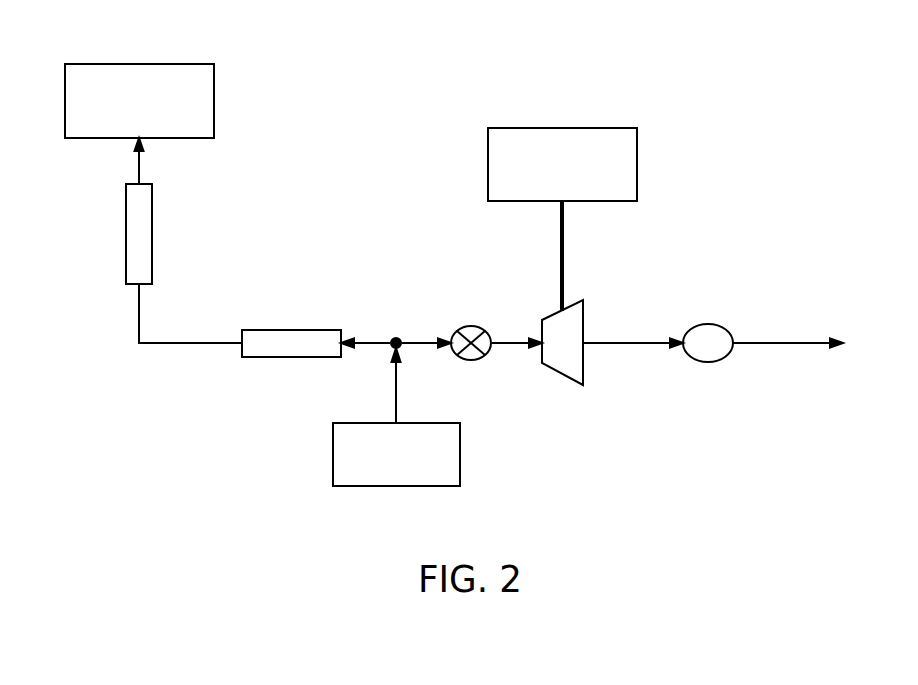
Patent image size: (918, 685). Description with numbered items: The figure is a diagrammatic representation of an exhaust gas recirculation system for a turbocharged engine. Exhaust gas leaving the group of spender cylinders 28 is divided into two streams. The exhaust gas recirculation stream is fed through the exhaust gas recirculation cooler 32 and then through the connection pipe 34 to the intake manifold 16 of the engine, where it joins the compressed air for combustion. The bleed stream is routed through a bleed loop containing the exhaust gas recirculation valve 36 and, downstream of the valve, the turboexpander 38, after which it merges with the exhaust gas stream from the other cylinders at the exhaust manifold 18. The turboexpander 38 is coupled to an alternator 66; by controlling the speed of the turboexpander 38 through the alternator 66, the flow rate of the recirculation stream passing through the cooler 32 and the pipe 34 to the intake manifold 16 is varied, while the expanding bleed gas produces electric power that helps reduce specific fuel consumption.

The intake manifold 16 is at (140, 64).
The connection pipe 34 is at (126, 210).
The exhaust gas recirculation cooler 32 is at (291, 330).
The exhaust gas recirculation valve 36 is at (471, 325).
The turboexpander 38 is at (552, 315).
The alternator 66 is at (561, 128).
The exhaust manifold 18 is at (708, 324).
The spender cylinders 28 is at (460, 455).